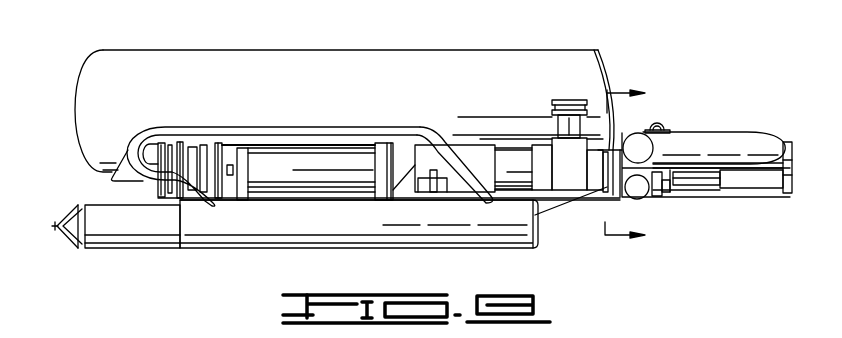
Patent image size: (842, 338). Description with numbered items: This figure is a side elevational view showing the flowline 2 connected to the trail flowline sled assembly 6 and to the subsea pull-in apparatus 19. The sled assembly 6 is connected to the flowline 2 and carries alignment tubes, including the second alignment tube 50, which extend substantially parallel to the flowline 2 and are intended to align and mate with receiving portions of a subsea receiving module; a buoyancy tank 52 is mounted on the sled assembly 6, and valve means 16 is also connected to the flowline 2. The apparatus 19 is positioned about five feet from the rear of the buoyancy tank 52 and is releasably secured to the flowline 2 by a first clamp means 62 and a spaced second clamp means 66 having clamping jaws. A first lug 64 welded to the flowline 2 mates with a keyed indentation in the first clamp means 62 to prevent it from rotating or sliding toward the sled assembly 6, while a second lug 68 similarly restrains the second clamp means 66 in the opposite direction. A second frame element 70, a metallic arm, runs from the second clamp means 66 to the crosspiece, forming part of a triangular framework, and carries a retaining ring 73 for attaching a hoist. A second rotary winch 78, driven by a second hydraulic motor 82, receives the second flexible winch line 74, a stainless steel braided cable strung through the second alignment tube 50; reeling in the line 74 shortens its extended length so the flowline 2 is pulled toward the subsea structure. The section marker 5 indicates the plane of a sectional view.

The trail flowline sled assembly 6 is at (66, 78).
The buoyancy tank 52 is at (368, 63).
The valve means 16 is at (560, 127).
The section line 5- 5 is at (632, 165).
The first lug 64 is at (615, 148).
The retaining ring 73 is at (660, 123).
The subsea pull-in apparatus 19 is at (723, 122).
The second frame element 70 is at (717, 143).
The second lug 68 is at (783, 142).
The second rotary winch 78 is at (637, 200).
The second hydraulic motor 82 is at (657, 190).
The flowline bundle 2 is at (705, 176).
The second clamp means 66 is at (748, 181).
The first clamp means 62 is at (679, 170).
The second flexible winch line 74 is at (553, 208).
The second alignment tube 50 is at (117, 230).